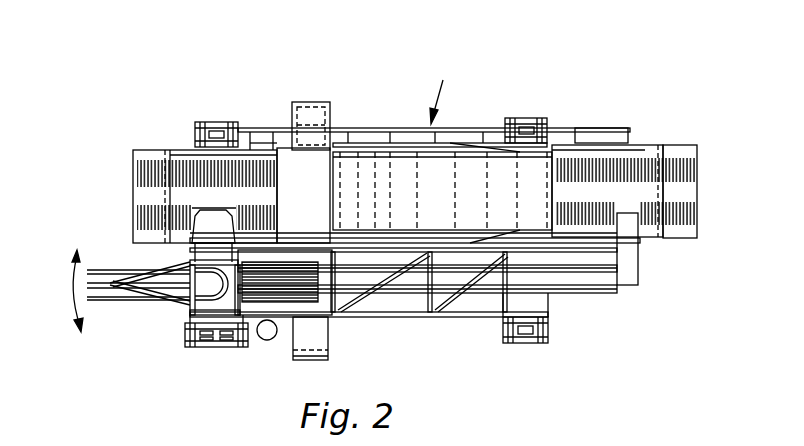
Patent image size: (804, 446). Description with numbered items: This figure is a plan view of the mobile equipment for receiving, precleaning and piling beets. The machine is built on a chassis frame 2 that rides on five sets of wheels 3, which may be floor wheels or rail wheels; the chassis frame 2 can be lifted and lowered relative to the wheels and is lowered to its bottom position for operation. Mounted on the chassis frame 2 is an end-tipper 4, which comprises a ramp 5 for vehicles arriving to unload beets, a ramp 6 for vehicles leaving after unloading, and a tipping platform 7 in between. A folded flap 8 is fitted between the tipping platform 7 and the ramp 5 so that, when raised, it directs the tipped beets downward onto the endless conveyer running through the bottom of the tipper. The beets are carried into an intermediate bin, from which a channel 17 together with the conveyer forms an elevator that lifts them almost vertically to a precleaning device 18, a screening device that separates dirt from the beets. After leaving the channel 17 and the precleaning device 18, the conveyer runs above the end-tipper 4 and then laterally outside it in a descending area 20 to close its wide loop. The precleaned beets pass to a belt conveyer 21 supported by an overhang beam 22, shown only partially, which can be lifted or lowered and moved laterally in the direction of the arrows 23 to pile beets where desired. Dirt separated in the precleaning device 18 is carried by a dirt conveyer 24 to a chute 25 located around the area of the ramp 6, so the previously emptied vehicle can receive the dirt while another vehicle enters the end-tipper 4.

The chassis frame 2 is at (596, 128).
The sets of wheels 3 is at (216, 122).
The end-tipper 4 is at (440, 90).
The ramp 5 is at (150, 171).
The ramp 6 is at (680, 166).
The tipping platform 7 is at (450, 176).
The folded flap 8 is at (300, 170).
The channel 17 is at (330, 354).
The precleaning device 18 is at (290, 302).
The descending area 20 is at (281, 187).
The belt conveyer 21 is at (107, 280).
The overhang beam 22 is at (130, 300).
The arrows 23 is at (75, 290).
The dirt conveyer 24 is at (604, 278).
The chute 25 is at (633, 262).